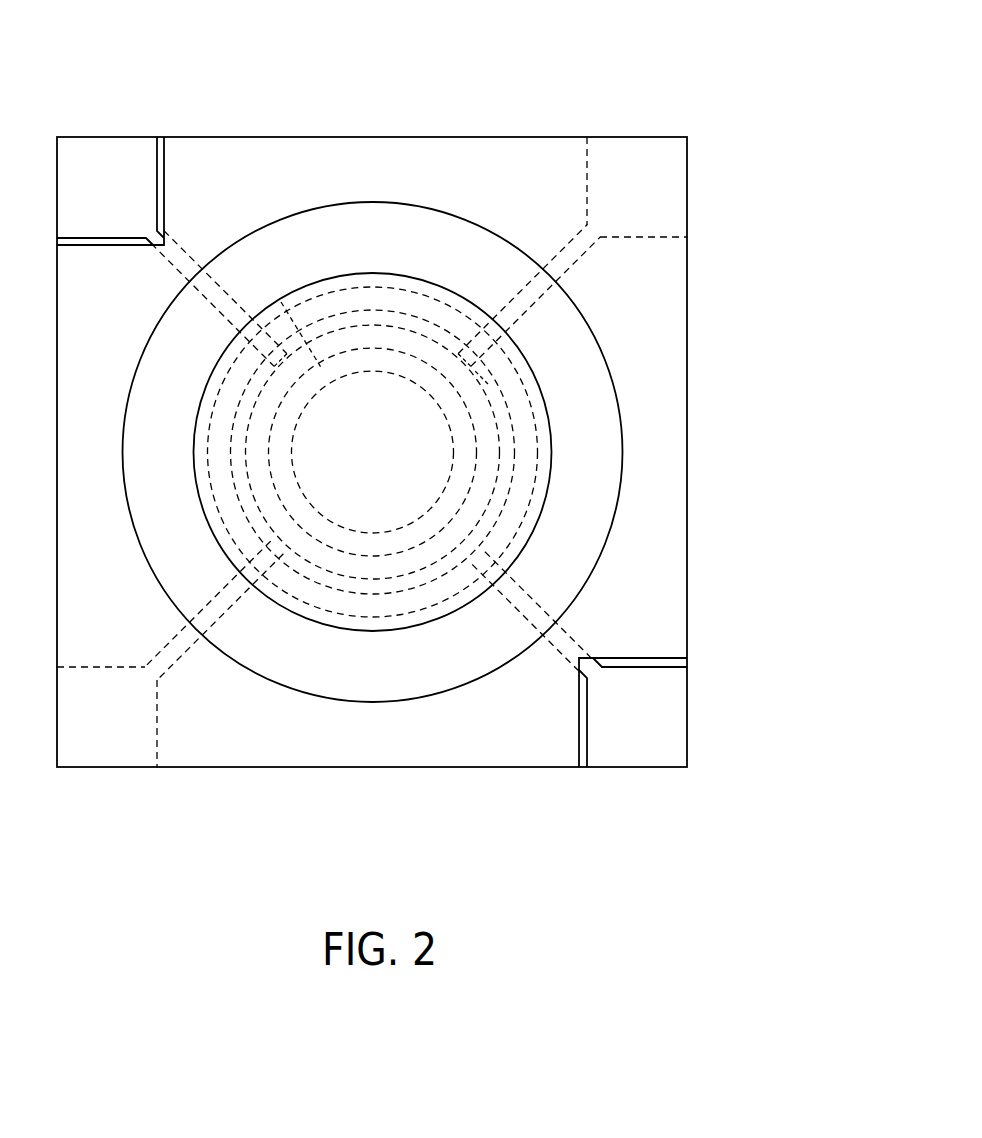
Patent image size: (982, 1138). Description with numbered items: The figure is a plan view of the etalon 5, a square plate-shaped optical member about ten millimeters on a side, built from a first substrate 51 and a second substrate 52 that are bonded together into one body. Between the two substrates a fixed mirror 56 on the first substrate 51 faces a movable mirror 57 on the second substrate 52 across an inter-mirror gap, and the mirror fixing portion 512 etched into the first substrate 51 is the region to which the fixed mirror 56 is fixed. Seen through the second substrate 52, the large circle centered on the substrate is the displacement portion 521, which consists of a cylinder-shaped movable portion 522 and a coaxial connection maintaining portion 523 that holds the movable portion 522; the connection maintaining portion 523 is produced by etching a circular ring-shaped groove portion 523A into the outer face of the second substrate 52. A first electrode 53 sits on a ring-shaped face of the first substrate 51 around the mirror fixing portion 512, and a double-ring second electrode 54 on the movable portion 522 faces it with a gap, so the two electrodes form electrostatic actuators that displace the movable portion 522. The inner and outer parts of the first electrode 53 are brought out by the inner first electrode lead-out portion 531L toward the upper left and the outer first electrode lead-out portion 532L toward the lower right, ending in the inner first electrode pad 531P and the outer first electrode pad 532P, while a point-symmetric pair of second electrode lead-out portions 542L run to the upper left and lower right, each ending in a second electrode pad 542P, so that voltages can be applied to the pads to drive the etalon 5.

The etalon 5 is at (483, 90).
The first substrate 51 is at (426, 452).
The second substrate 52 is at (688, 408).
The mirror fixing portion 512 is at (402, 274).
The displacement portion 521 is at (434, 206).
The movable portion 522 is at (387, 420).
The connection maintaining portion 523 is at (373, 420).
The groove portion 523A is at (468, 306).
The first electrode 53 is at (373, 486).
The second electrode 54 is at (375, 612).
The fixed mirror 56 is at (373, 388).
The movable mirror 57 is at (360, 372).
The inner first electrode pad 531P is at (105, 160).
The inner first electrode lead-out portion 531L is at (200, 262).
The outer first electrode pad 532P is at (637, 752).
The outer first electrode lead-out portion 532L is at (558, 658).
The second electrode pad 542P is at (637, 137).
The second electrode lead-out portion 542L is at (578, 268).